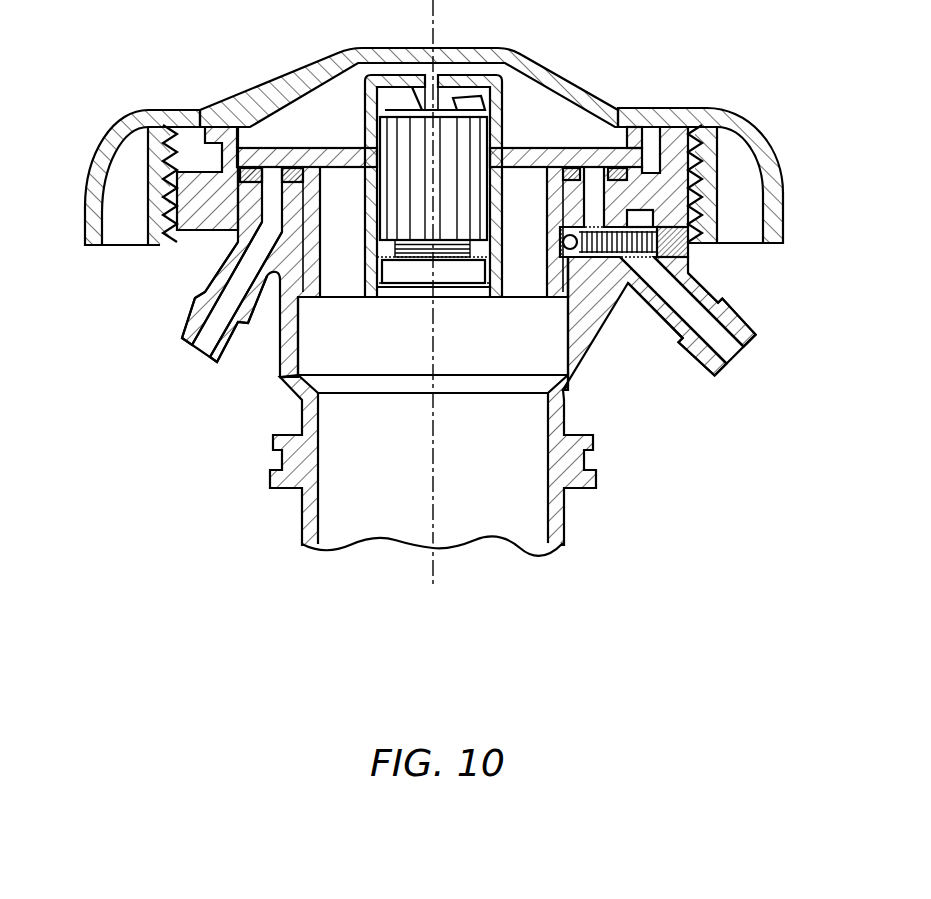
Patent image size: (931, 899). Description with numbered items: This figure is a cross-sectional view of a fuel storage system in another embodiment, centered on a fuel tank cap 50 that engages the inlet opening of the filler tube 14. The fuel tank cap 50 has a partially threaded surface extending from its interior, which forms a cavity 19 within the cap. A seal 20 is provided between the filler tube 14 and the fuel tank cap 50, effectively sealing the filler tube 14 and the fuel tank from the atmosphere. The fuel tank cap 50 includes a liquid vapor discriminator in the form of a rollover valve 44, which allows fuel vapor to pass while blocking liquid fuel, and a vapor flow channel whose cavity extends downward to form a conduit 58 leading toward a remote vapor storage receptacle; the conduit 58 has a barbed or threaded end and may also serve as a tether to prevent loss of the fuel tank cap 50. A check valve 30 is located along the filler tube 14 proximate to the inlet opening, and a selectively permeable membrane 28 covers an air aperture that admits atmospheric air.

The filler tube 14 is at (302, 520).
The cavity 19 is at (193, 145).
The seal 20 is at (203, 290).
The selectively permeable membrane 28 is at (753, 333).
The check valve 30 is at (642, 265).
The rollover valve 44 is at (467, 310).
The fuel tank cap 50 is at (120, 122).
The conduit 58 is at (180, 333).